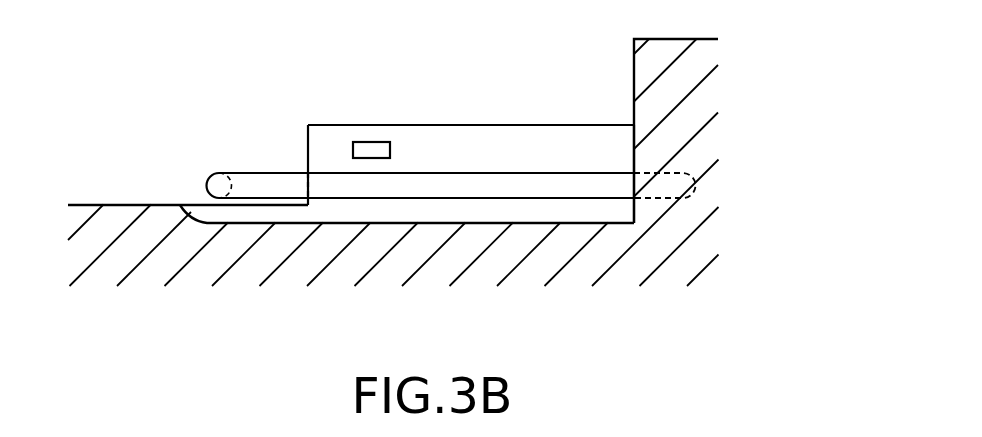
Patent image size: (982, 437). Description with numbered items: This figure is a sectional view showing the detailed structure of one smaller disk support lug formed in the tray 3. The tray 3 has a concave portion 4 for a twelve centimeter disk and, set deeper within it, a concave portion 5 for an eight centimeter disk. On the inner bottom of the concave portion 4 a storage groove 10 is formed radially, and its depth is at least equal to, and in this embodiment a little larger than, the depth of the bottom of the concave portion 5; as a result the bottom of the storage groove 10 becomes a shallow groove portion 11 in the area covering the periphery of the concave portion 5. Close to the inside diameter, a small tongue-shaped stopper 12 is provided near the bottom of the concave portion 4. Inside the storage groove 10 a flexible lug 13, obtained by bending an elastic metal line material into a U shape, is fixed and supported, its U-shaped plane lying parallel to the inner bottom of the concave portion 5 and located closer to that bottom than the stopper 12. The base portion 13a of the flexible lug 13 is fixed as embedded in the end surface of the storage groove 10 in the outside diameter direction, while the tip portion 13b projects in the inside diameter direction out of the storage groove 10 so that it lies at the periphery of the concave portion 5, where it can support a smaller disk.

The tray 3 is at (664, 64).
The concave portion for a 12 cm disk 4 is at (477, 123).
The concave portion for an 8 cm disk 5 is at (115, 205).
The storage groove 10 is at (471, 150).
The shallow groove portion 11 is at (312, 223).
The stopper 12 is at (368, 147).
The flexible lug 13 is at (424, 188).
The base portion 13a is at (693, 186).
The tip portion 13b is at (245, 173).